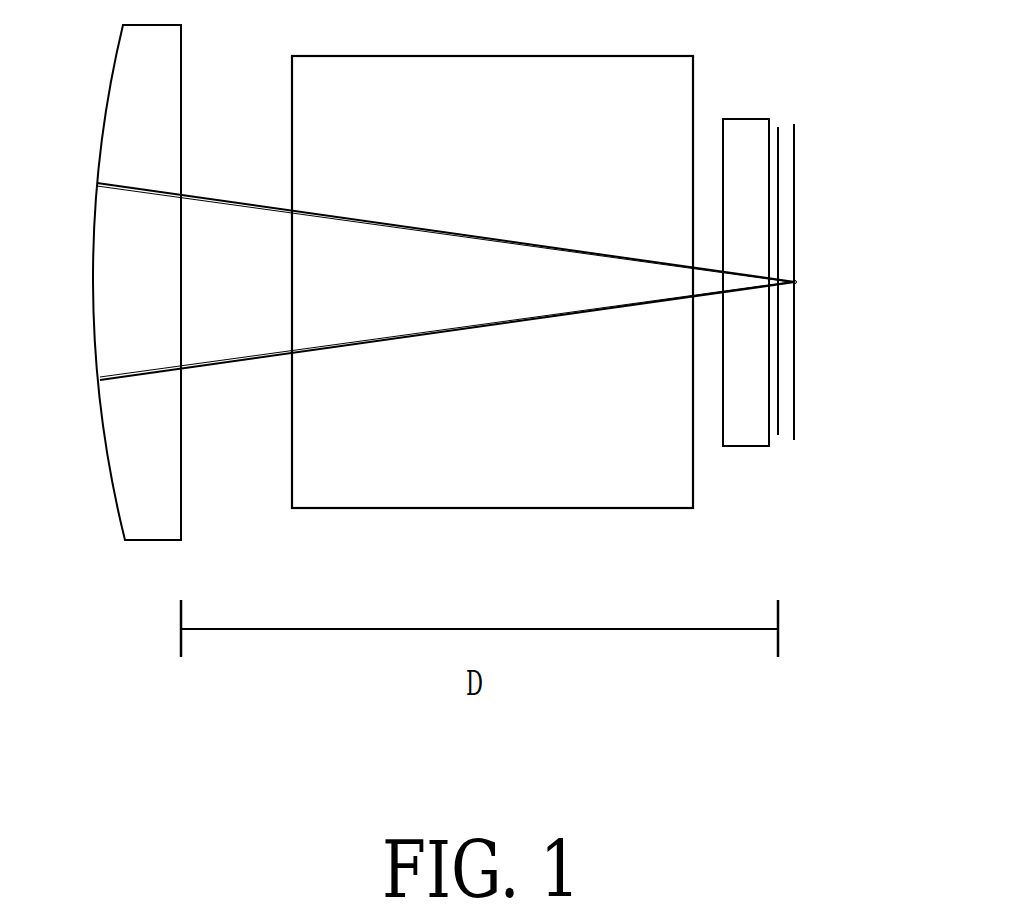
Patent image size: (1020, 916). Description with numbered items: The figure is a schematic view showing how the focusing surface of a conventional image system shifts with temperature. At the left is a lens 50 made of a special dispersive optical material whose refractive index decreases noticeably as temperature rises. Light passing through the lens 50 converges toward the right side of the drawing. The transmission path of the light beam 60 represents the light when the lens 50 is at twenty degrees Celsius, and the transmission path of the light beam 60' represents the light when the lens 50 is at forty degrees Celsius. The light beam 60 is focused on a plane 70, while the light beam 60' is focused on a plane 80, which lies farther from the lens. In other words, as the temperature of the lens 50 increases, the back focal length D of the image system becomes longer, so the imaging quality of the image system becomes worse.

The lens 50 is at (117, 483).
The light beam 60 is at (747, 253).
The light beam 60' is at (809, 239).
The plane 70 is at (778, 419).
The plane 80 is at (795, 381).